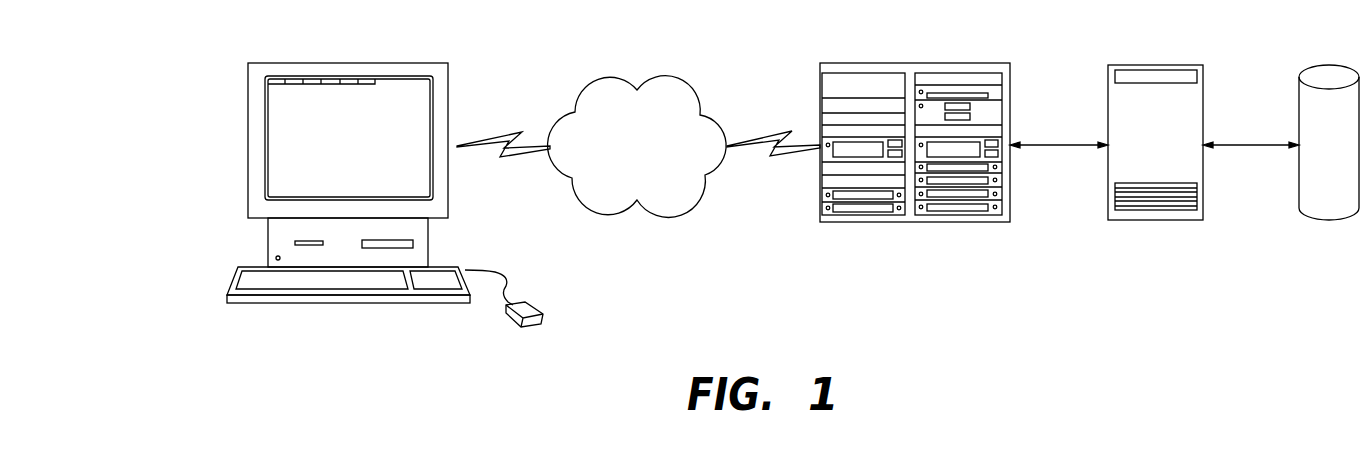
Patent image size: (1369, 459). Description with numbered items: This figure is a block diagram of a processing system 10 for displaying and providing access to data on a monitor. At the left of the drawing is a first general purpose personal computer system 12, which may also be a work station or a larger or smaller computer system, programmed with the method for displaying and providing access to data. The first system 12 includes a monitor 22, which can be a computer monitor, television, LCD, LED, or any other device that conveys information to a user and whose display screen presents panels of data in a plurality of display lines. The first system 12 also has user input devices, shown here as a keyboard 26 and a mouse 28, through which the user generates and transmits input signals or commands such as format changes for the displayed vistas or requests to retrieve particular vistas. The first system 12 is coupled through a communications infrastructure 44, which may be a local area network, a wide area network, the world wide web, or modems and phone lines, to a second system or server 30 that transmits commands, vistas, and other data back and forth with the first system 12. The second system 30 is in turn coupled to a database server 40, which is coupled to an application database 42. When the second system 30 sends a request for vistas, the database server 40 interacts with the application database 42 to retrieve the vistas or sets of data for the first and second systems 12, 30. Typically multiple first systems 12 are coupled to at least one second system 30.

The processing system 10 is at (793, 256).
The first general purpose personal computer system 12 is at (208, 100).
The monitor 22 is at (418, 102).
The keyboard 26 is at (353, 285).
The mouse 28 is at (543, 318).
The second system or server 30 is at (853, 217).
The database server 40 is at (1127, 215).
The application database 42 is at (1318, 118).
The communications infrastructure 44 is at (668, 193).